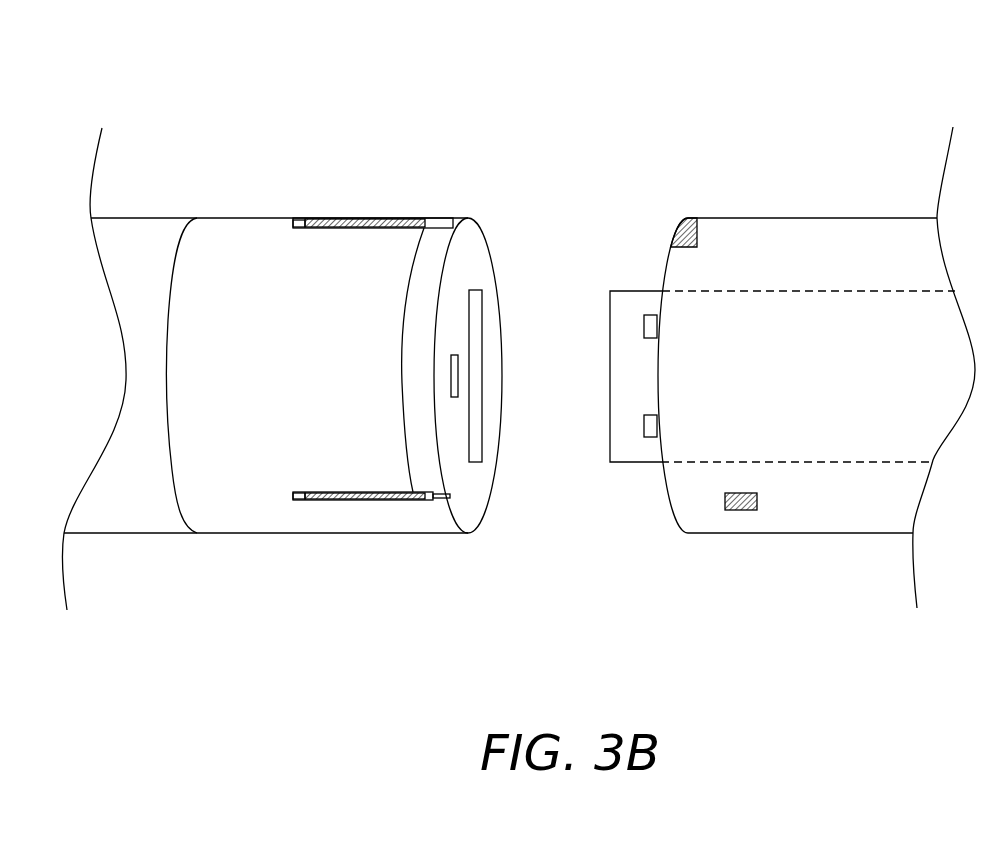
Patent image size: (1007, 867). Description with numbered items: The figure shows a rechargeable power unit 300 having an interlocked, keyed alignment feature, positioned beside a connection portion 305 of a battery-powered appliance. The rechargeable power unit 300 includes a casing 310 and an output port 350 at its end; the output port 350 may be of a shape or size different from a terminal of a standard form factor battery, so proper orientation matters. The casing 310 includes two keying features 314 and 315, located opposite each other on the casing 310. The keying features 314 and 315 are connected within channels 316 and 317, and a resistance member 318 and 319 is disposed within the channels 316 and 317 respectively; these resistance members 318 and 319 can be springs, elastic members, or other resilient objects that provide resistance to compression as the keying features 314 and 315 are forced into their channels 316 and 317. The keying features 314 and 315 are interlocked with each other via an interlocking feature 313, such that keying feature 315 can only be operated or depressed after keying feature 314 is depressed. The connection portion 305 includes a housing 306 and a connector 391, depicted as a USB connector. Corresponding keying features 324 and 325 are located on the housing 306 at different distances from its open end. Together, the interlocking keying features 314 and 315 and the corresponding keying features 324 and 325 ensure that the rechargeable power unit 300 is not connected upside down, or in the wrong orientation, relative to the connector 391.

The rechargeable power unit 300 is at (306, 323).
The connection portion 305 is at (784, 338).
The housing 306 is at (773, 218).
The casing 310 is at (245, 533).
The interlocking feature 313 is at (400, 303).
The keying feature 314 is at (447, 218).
The keying feature 315 is at (438, 500).
The channel 316 is at (373, 218).
The channel 317 is at (362, 500).
The resistance member 318 is at (305, 218).
The resistance member 319 is at (307, 500).
The keying feature 324 is at (680, 218).
The keying feature 325 is at (738, 510).
The output port 350 is at (482, 302).
The connector 391 is at (620, 462).